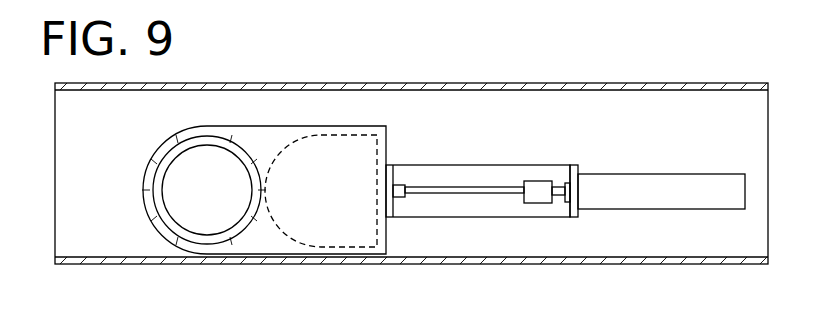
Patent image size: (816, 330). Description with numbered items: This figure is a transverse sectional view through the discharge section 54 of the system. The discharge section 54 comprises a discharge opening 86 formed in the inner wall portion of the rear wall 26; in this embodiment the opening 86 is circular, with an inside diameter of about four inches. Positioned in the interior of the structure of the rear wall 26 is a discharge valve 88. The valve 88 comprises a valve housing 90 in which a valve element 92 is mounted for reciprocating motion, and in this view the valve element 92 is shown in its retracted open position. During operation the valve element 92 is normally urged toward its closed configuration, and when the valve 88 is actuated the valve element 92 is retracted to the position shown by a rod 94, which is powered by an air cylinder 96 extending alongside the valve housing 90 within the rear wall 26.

The rear wall 26 is at (214, 88).
The discharge section 54 is at (449, 75).
The discharge opening 86 is at (192, 217).
The discharge valve 88 is at (453, 145).
The valve housing 90 is at (270, 135).
The valve element 92 is at (302, 242).
The rod 94 is at (470, 192).
The air cylinder 96 is at (628, 193).